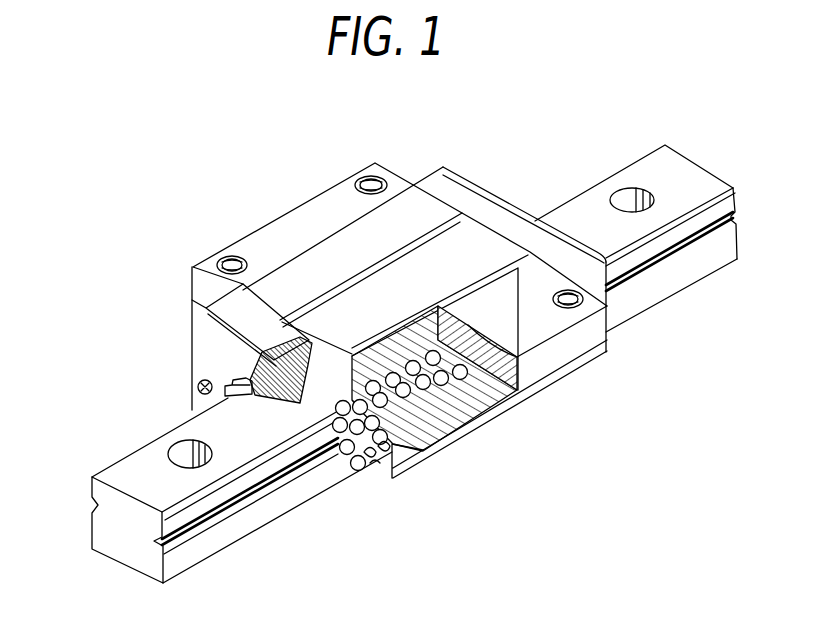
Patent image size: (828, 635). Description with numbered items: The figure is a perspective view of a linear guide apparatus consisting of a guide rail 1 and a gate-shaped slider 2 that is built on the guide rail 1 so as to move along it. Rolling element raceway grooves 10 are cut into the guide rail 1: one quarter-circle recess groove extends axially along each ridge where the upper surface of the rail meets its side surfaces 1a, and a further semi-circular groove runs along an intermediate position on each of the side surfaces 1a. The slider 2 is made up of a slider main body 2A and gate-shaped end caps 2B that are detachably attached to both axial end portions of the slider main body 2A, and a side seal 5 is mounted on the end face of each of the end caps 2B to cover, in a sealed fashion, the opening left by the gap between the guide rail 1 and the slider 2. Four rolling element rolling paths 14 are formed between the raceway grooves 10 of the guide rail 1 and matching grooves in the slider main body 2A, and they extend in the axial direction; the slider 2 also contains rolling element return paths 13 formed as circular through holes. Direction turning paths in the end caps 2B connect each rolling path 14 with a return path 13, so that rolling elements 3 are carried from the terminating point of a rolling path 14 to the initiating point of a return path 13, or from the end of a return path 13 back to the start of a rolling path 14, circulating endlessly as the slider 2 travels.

The guide rail 1 is at (163, 431).
The side surfaces 1a is at (87, 528).
The slider 2 is at (373, 326).
The slider main body 2A is at (323, 213).
The end caps 2B is at (458, 188).
The rolling elements 3 is at (478, 437).
The side seal 5 is at (530, 207).
The rolling element raceway groove 10 is at (92, 475).
The rolling element return paths 13 is at (383, 456).
The rolling element rolling paths 14 is at (395, 382).